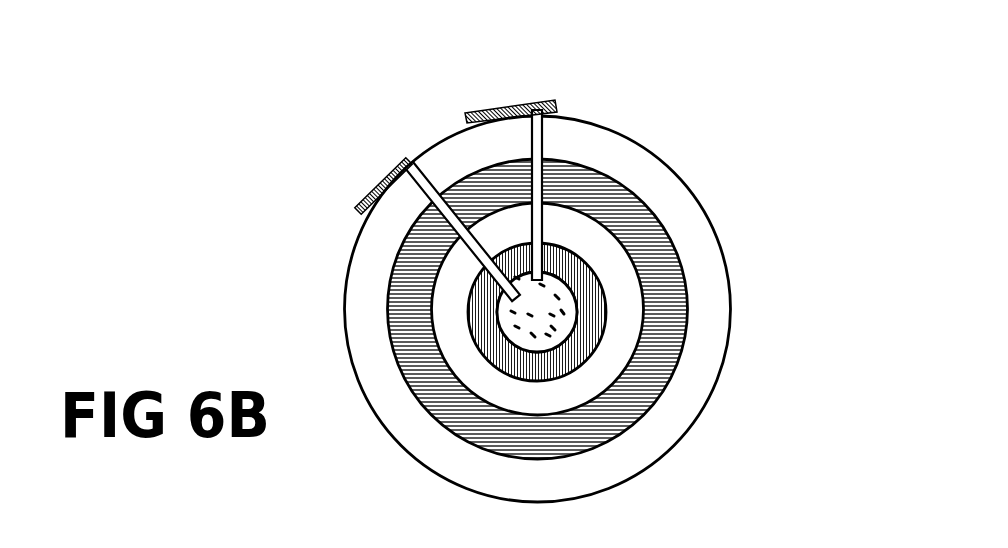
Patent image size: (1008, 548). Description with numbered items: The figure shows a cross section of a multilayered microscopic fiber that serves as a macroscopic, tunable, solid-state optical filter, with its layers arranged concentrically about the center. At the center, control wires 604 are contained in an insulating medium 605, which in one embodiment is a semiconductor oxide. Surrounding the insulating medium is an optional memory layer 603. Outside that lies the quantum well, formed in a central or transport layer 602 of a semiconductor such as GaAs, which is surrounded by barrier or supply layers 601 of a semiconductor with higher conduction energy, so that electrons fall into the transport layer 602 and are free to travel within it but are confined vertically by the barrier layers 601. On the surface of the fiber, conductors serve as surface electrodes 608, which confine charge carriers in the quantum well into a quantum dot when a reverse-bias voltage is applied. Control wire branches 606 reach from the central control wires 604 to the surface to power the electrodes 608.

The barrier or supply layers 601 is at (598, 243).
The central or transport layer 602 is at (657, 268).
The memory layer 603 is at (577, 287).
The control wires 604 is at (584, 327).
The insulating medium 605 is at (548, 333).
The control wire branches 606 is at (450, 220).
The surface electrodes 608 is at (366, 190).